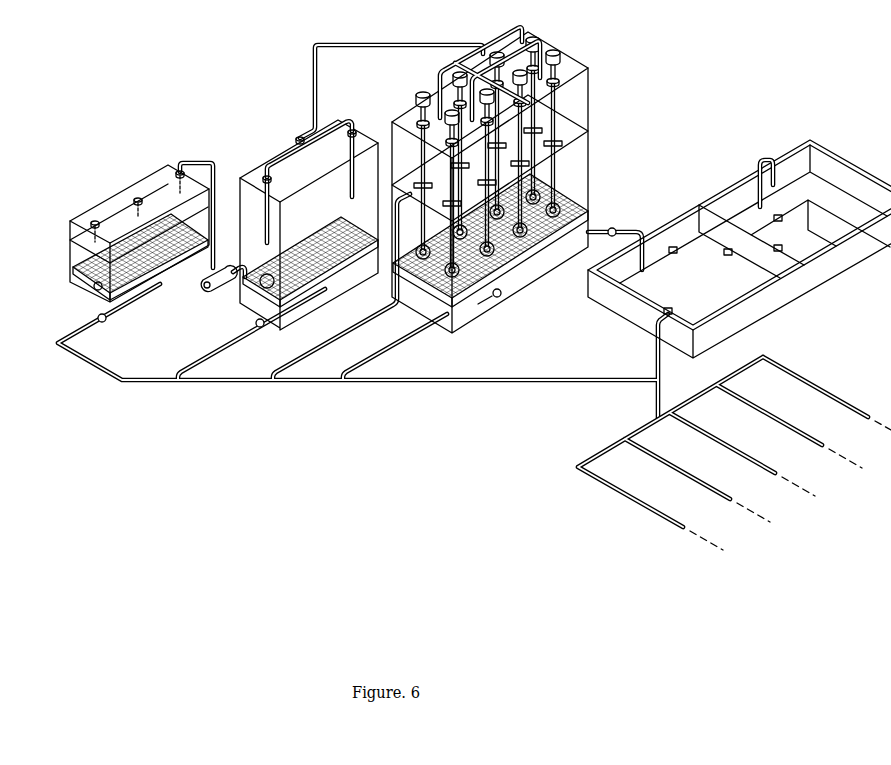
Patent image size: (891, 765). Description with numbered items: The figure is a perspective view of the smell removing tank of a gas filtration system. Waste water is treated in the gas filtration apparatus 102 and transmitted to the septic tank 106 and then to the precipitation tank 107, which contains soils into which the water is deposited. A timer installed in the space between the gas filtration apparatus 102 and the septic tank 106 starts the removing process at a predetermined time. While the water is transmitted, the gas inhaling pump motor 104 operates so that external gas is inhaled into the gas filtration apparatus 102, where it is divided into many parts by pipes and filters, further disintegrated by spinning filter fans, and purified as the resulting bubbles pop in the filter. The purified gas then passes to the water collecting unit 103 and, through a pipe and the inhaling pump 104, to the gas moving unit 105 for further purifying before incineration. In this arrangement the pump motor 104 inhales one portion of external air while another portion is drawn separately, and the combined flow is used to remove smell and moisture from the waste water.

The gas filtration apparatus 102 is at (468, 328).
The water collecting unit 103 is at (243, 277).
The gas inhaling pump motor 104 is at (203, 284).
The gas moving unit 105 is at (110, 203).
The septic tank 106 is at (622, 309).
The precipitation tank 107 is at (617, 443).